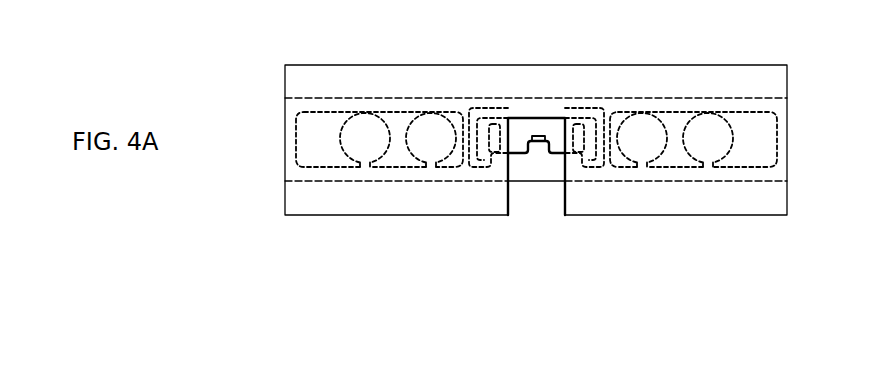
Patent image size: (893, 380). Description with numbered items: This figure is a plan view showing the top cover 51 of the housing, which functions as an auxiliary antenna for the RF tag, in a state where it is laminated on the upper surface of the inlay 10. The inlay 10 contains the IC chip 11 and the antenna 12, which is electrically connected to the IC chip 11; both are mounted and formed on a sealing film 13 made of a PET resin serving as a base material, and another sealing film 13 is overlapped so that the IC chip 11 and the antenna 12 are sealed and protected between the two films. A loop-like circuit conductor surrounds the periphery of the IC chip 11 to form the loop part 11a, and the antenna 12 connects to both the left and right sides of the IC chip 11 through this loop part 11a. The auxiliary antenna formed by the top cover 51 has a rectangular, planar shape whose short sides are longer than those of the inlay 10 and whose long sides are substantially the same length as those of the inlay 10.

The inlay 10 is at (662, 298).
The IC chip 11 is at (544, 154).
The loop part 11a is at (553, 156).
The antenna 12 is at (398, 157).
The sealing film 13 is at (537, 146).
The top cover 51 is at (342, 215).